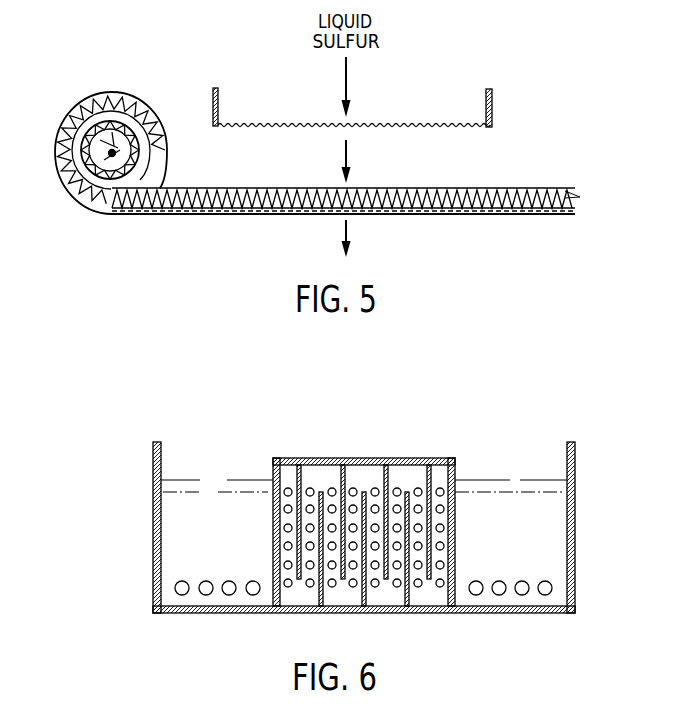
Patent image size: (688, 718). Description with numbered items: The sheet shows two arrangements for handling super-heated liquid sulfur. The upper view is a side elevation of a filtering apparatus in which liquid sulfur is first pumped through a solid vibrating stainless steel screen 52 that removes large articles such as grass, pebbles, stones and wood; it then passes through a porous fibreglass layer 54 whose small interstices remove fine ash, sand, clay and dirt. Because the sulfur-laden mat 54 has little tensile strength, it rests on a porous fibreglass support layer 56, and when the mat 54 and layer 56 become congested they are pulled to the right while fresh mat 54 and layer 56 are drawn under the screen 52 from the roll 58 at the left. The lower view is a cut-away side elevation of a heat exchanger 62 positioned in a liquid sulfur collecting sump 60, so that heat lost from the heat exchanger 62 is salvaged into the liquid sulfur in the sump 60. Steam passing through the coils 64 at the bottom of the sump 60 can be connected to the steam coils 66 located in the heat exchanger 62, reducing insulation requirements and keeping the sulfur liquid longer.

In FIG. 5, the vibrating stainless steel screen 52 is at (492, 92).
In FIG. 5, the porous fibreglass layer 54 is at (503, 192).
In FIG. 5, the fibreglass support layer 56 is at (503, 218).
In FIG. 5, the roll 58 is at (133, 92).
In FIG. 6, the sump 60 is at (575, 484).
In FIG. 6, the heat exchanger 62 is at (380, 458).
In FIG. 6, the steam coils 64 is at (182, 584).
In FIG. 6, the steam coils 66 is at (443, 512).